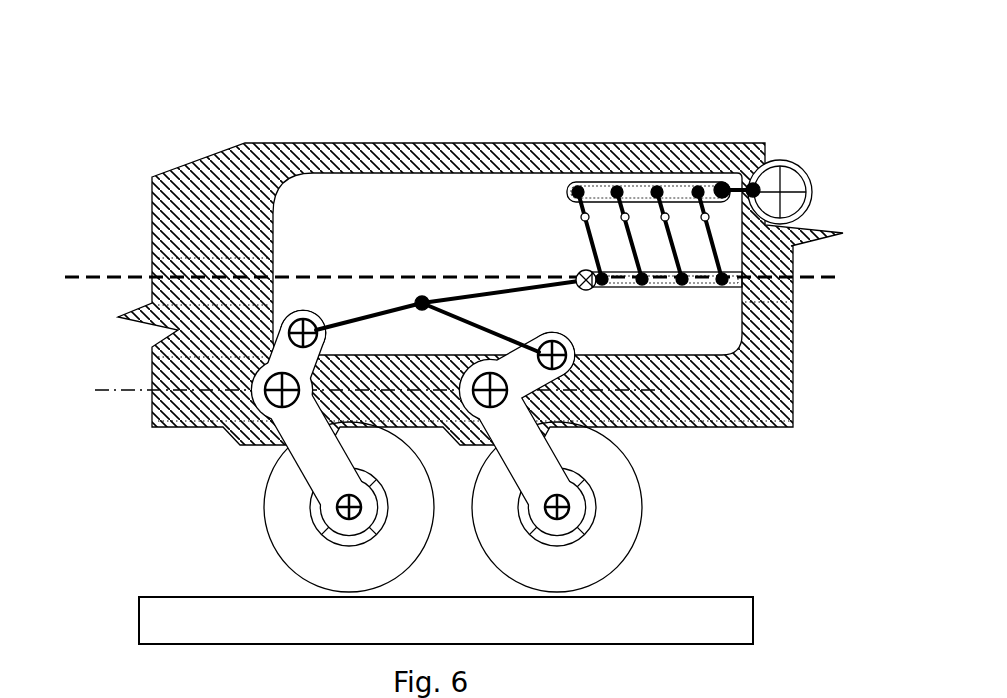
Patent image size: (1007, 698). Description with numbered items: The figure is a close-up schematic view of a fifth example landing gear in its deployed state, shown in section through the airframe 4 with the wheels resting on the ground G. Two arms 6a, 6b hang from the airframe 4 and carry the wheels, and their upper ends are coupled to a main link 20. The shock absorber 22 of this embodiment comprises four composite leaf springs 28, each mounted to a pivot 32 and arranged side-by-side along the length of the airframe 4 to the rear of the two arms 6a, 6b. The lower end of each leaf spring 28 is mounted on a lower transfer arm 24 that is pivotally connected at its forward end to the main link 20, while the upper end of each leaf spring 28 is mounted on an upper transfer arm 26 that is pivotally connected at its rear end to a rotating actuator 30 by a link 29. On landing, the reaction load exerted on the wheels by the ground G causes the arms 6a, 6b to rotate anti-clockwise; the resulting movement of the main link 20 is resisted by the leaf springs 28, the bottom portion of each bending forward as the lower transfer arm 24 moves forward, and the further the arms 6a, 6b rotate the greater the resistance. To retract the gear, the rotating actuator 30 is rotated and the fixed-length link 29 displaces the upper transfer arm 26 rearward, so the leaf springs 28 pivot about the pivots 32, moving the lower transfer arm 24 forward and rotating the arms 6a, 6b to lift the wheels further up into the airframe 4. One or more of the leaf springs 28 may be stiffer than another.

The airframe 4 is at (205, 195).
The arm 6a is at (307, 442).
The arm 6b is at (522, 452).
The main link 20 is at (473, 297).
The shock absorber 22 is at (707, 155).
The lower transfer arm 24 is at (663, 280).
The upper transfer arm 26 is at (593, 192).
The composite leaf spring 28 is at (603, 258).
The link 29 is at (737, 187).
The rotating actuator 30 is at (790, 182).
The pivot 32 is at (585, 215).
The ground G is at (733, 618).